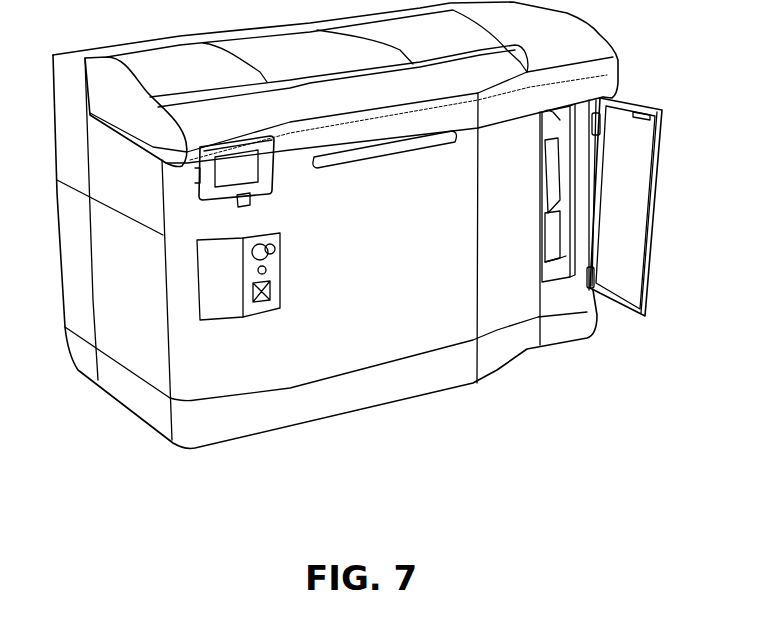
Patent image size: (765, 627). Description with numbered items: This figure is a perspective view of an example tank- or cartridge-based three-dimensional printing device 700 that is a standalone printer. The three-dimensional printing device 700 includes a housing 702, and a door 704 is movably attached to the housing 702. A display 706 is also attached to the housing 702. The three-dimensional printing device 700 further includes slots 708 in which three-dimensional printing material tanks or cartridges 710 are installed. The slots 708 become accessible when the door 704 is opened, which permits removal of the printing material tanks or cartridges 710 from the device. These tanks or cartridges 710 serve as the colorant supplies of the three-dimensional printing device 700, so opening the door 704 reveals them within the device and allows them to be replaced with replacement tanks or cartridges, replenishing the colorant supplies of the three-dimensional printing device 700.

The 3D-printing device 700 is at (88, 524).
The housing 702 is at (67, 241).
The door 704 is at (640, 253).
The display 706 is at (245, 197).
The slots 708 is at (560, 224).
The 3D printing material tanks or cartridges 710 is at (548, 237).